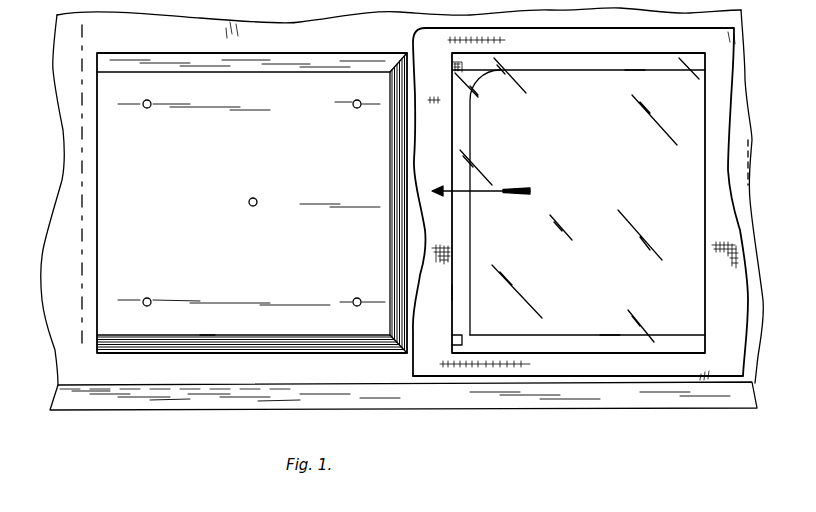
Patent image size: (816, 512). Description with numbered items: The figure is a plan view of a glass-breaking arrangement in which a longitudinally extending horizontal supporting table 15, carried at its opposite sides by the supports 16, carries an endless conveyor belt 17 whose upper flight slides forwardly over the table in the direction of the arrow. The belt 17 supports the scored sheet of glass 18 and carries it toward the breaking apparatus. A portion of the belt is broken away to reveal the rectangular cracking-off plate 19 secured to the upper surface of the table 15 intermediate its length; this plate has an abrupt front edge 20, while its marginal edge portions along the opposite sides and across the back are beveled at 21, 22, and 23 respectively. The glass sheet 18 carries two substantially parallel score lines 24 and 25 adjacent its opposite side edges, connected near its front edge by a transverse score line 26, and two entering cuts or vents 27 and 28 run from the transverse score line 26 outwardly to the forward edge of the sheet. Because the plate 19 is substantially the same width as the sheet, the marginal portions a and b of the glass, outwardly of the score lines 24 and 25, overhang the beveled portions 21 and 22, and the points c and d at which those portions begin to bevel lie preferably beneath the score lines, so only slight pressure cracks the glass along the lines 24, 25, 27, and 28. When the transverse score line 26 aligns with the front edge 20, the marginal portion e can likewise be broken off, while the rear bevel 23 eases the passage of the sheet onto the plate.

The supporting table 15 is at (252, 375).
The supports 16 is at (141, 398).
The endless conveyor belt 17 is at (572, 366).
The scored sheet of glass 18 is at (692, 131).
The cracking-off plate 19 is at (120, 258).
The front edge 20 is at (96, 303).
The beveled marginal edge portion 21 is at (168, 346).
The beveled marginal edge portion 22 is at (262, 38).
The rear beveled marginal portion 23 is at (400, 128).
The score line 24 is at (575, 335).
The score line 25 is at (580, 72).
The transverse score line 26 is at (470, 220).
The entering cut 27 is at (455, 340).
The entering cut 28 is at (453, 72).
The marginal portion a is at (609, 340).
The marginal portion b is at (635, 57).
The bevel starting point c is at (204, 334).
The bevel starting point d is at (326, 73).
The front marginal portion e is at (458, 292).